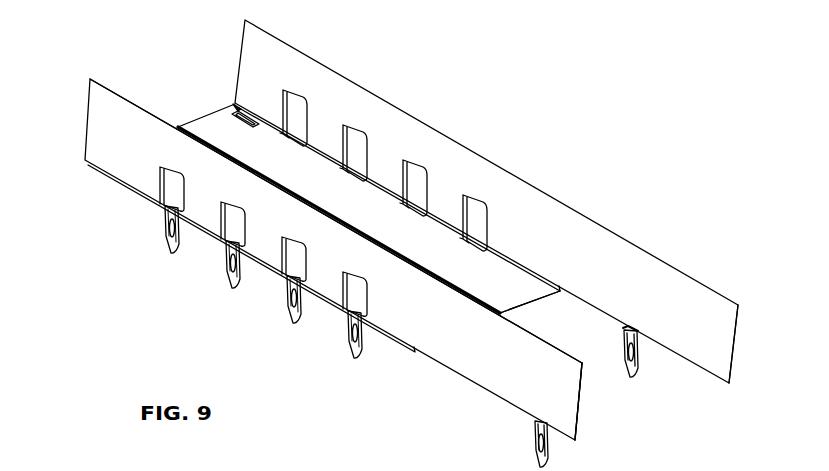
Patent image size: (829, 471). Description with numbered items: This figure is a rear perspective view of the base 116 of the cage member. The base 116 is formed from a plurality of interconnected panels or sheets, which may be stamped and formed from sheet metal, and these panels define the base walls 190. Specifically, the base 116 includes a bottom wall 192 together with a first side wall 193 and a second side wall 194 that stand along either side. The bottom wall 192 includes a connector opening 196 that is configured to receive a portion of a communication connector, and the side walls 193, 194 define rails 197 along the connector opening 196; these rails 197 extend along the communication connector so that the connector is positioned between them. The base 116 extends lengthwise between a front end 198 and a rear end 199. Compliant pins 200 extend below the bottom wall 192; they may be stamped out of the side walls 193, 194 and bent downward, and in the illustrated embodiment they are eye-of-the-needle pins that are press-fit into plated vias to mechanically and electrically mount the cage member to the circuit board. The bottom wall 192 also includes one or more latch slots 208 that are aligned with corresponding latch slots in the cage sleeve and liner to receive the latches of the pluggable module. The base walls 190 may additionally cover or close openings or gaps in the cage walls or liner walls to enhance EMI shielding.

The base 116 is at (553, 139).
The base walls 190 is at (448, 330).
The bottom wall 192 is at (500, 283).
The first side wall 193 is at (123, 157).
The second side wall 194 is at (315, 78).
The connector opening 196 is at (578, 338).
The rails 197 is at (723, 335).
The front end 198 is at (82, 125).
The rear end 199 is at (583, 387).
The compliant pins 200 is at (342, 342).
The latch slots 208 is at (237, 107).